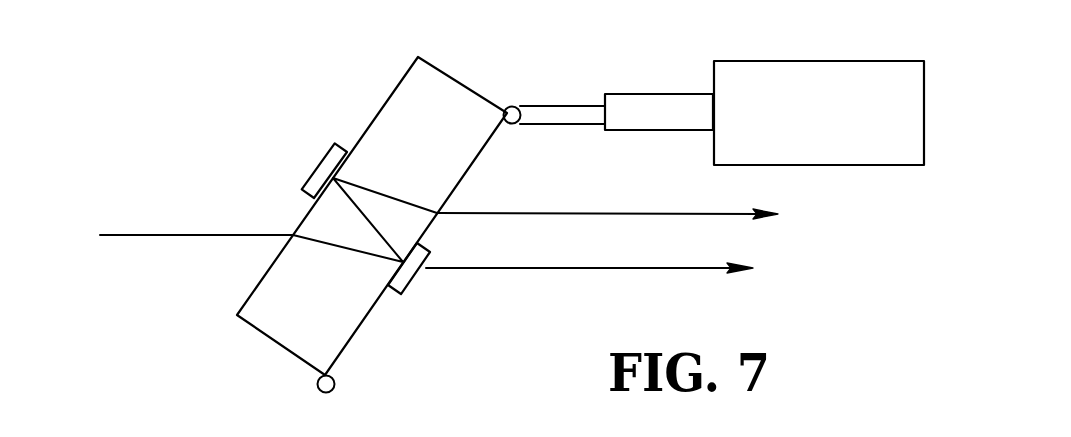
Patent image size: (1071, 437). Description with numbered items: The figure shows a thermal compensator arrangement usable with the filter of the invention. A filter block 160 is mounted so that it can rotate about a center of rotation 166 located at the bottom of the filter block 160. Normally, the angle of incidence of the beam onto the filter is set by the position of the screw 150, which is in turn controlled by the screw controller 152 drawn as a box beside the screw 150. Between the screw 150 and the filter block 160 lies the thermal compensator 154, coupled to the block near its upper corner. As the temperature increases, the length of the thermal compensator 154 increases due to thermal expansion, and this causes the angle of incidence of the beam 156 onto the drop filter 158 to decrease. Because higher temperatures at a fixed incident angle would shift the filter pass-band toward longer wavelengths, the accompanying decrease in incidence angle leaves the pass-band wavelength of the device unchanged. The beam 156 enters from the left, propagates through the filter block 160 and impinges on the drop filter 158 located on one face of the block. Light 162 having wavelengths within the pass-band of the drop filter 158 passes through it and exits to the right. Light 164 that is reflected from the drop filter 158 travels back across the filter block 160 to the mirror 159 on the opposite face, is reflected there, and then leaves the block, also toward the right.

The screw 150 is at (668, 92).
The screw controller 152 is at (795, 60).
The thermal compensator 154 is at (558, 103).
The beam 156 is at (143, 235).
The drop filter 158 is at (415, 285).
The mirror 159 is at (322, 165).
The filter block 160 is at (397, 83).
The light 162 is at (640, 270).
The light 164 is at (563, 213).
The center of rotation 166 is at (335, 389).